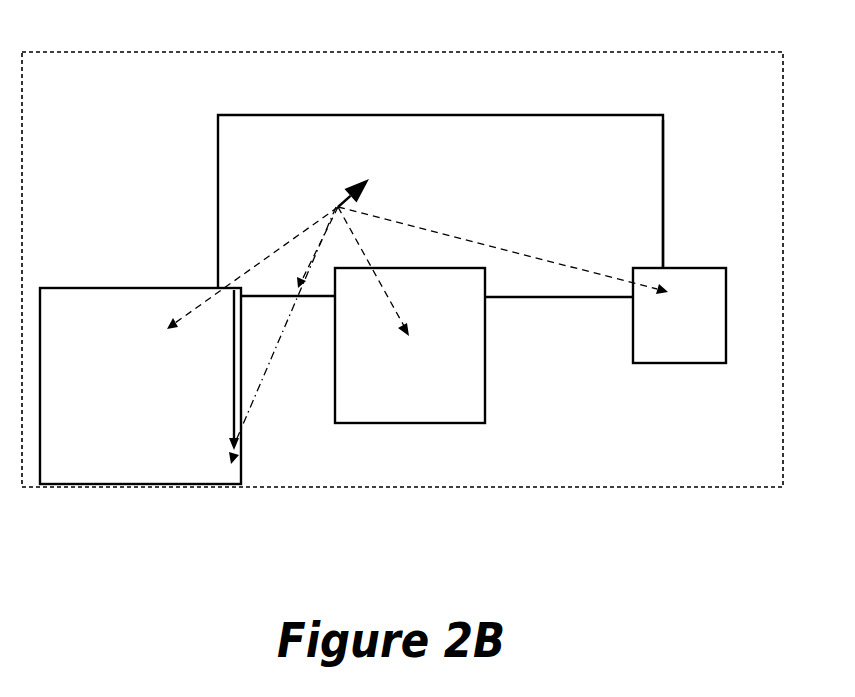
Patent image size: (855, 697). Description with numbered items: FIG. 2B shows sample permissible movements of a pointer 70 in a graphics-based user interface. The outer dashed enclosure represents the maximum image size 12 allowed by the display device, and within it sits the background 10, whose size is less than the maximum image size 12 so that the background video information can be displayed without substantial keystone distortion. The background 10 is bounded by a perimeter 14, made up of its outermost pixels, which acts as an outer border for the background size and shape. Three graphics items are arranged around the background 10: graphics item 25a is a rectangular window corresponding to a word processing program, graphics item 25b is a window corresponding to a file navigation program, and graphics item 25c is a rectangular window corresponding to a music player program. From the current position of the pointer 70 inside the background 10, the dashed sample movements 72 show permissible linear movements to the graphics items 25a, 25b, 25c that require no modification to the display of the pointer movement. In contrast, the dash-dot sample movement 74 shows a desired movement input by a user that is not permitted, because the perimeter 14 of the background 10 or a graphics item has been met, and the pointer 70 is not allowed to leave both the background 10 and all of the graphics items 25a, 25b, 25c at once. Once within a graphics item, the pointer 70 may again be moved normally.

The maximum image size 12 is at (693, 52).
The background 10 is at (663, 115).
The perimeter 14 is at (663, 165).
The graphics item 25a is at (132, 285).
The graphics item 25b is at (640, 366).
The graphics item 25c is at (458, 423).
The pointer 70 is at (352, 183).
The sample movements 72 is at (307, 228).
The sample movement 74 is at (258, 298).